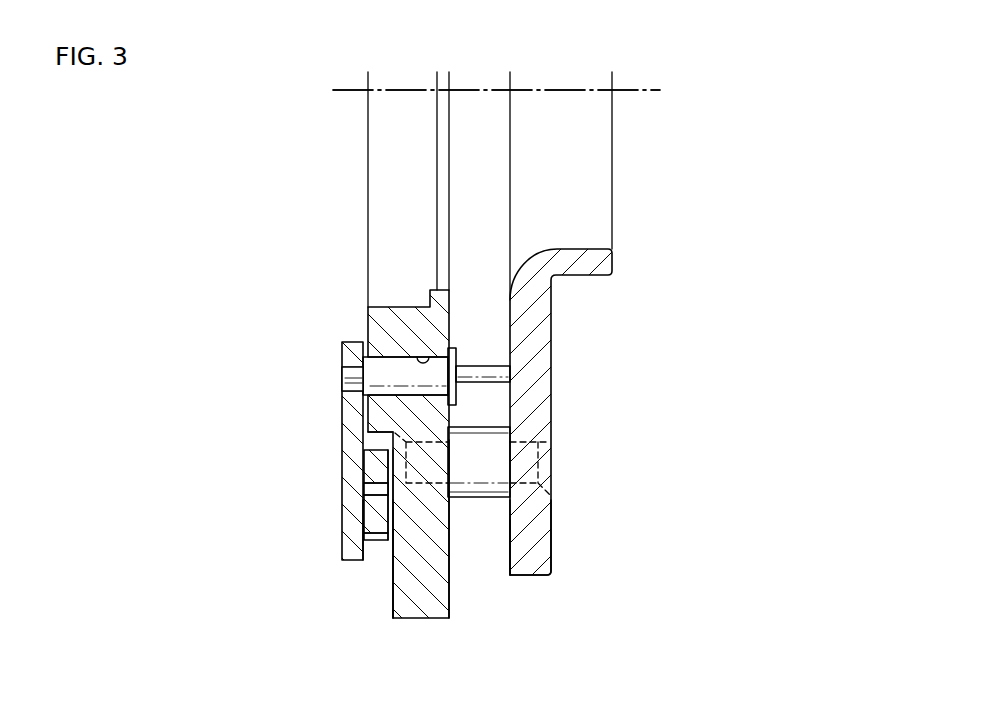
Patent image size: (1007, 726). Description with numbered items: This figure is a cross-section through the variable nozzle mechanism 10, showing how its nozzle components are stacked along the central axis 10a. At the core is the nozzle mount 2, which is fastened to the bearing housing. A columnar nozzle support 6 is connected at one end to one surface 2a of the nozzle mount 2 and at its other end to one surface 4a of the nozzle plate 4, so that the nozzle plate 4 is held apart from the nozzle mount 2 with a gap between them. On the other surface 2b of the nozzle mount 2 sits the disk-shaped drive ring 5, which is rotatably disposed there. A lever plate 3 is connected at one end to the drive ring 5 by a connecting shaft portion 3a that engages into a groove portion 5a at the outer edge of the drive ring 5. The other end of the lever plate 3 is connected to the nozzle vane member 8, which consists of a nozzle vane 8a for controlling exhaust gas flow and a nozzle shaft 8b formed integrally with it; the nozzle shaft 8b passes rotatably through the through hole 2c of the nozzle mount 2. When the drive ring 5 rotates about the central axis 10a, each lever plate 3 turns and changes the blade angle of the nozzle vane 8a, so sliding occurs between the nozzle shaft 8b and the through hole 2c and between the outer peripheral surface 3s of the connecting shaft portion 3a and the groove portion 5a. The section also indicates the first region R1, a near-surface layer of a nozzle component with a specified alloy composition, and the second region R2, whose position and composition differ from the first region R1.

The variable nozzle mechanism 10 is at (745, 106).
The central axis 10a is at (652, 90).
The nozzle mount 2 is at (423, 618).
The one surface of the nozzle mount 2a is at (452, 592).
The other surface of the nozzle mount 2b is at (393, 610).
The through hole 2c is at (430, 356).
The lever plate 3 is at (350, 455).
The connecting shaft portion 3a is at (365, 520).
The outer peripheral surface of the connecting shaft portion 3s is at (373, 540).
The nozzle plate 4 is at (537, 548).
The one surface of the nozzle plate 4a is at (508, 550).
The drive ring 5 is at (386, 540).
The groove portion 5a is at (382, 492).
The nozzle support 6 is at (465, 498).
The nozzle vane member 8 is at (506, 360).
The nozzle vane 8a is at (470, 366).
The nozzle shaft 8b is at (400, 352).
The first region R1 is at (392, 394).
The second region R2 is at (398, 410).